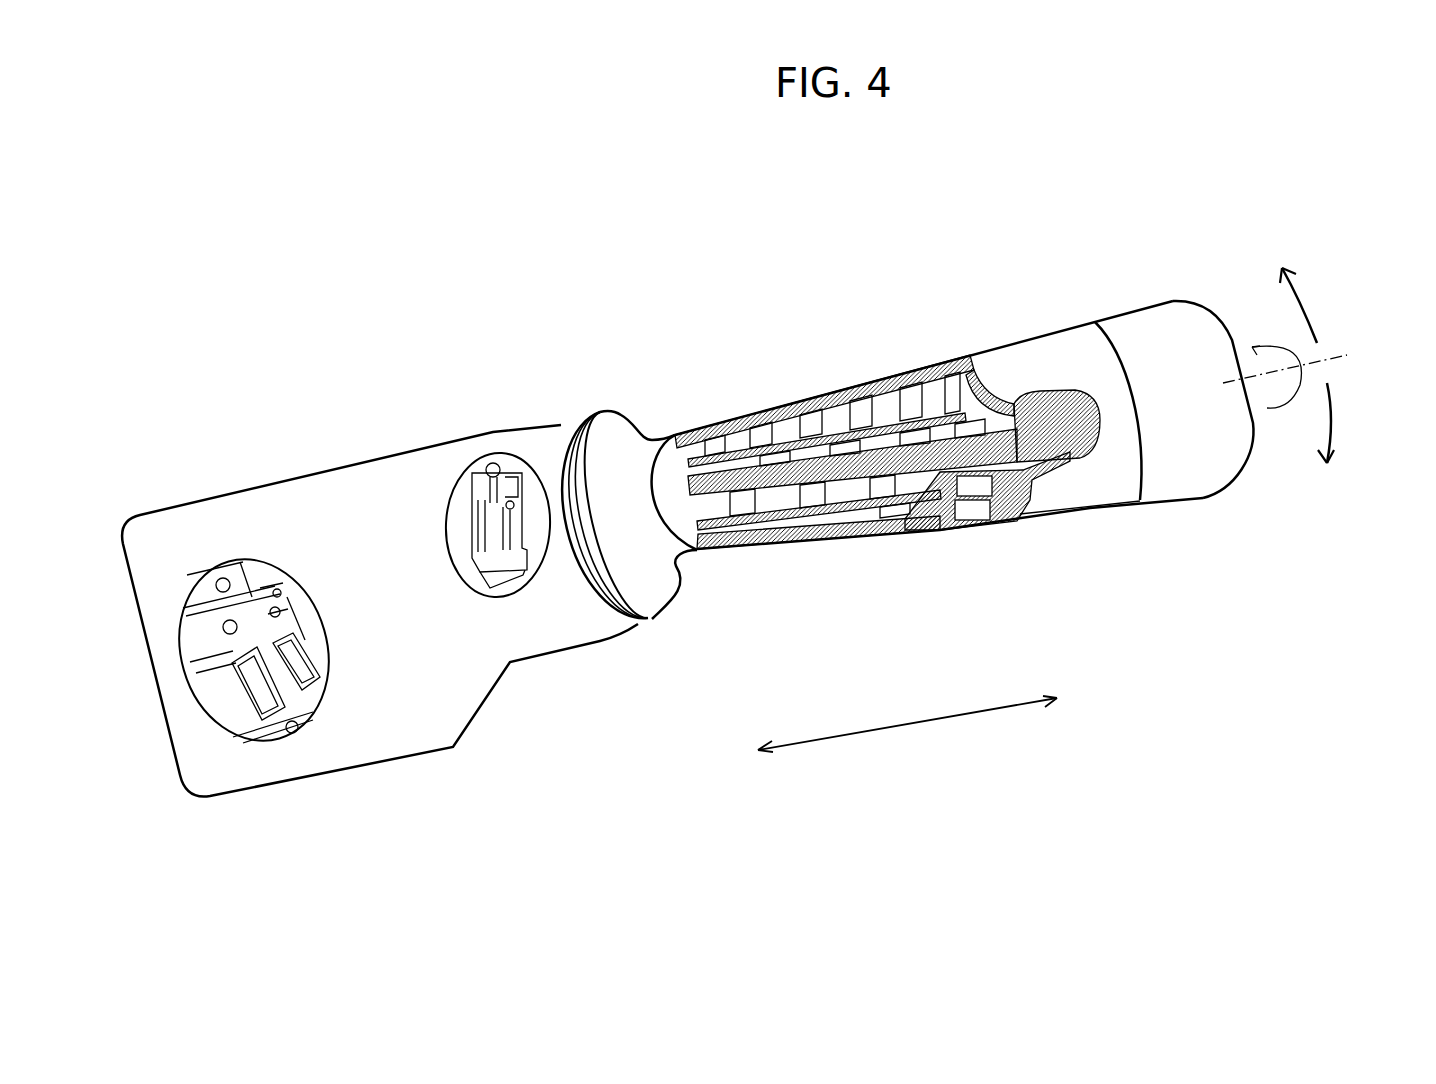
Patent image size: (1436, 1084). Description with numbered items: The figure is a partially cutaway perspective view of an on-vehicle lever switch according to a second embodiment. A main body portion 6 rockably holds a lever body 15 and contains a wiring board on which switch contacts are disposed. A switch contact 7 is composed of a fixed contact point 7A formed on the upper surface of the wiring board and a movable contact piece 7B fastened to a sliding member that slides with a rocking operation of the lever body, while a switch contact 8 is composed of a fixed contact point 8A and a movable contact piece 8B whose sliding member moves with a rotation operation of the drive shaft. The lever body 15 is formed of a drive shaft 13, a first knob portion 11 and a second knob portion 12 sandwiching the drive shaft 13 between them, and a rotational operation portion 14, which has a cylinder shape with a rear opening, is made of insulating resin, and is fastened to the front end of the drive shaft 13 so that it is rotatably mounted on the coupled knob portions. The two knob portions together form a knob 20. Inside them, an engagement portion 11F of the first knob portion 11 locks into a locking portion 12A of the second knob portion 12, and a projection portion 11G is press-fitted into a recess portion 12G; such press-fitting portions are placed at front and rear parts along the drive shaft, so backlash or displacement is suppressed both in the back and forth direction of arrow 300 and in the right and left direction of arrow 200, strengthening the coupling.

The main body portion 6 is at (433, 750).
The switch contact 7 is at (253, 727).
The fixed contact point 7A is at (222, 638).
The movable contact piece 7B is at (272, 702).
The switch contact 8 is at (435, 463).
The fixed contact point 8A is at (480, 490).
The movable contact piece 8B is at (488, 560).
The first knob portion 11 is at (596, 445).
The engagement portion 11F is at (890, 490).
The projection portion 11G is at (935, 380).
The second knob portion 12 is at (621, 415).
The locking portion 12A is at (833, 400).
The recess portion 12G is at (915, 390).
The drive shaft 13 is at (830, 475).
The rotational operation portion 14 is at (1200, 480).
The lever body 15 is at (1135, 297).
The knob 20 is at (1097, 490).
The arrow 200 is at (1330, 430).
The arrow 300 is at (907, 746).